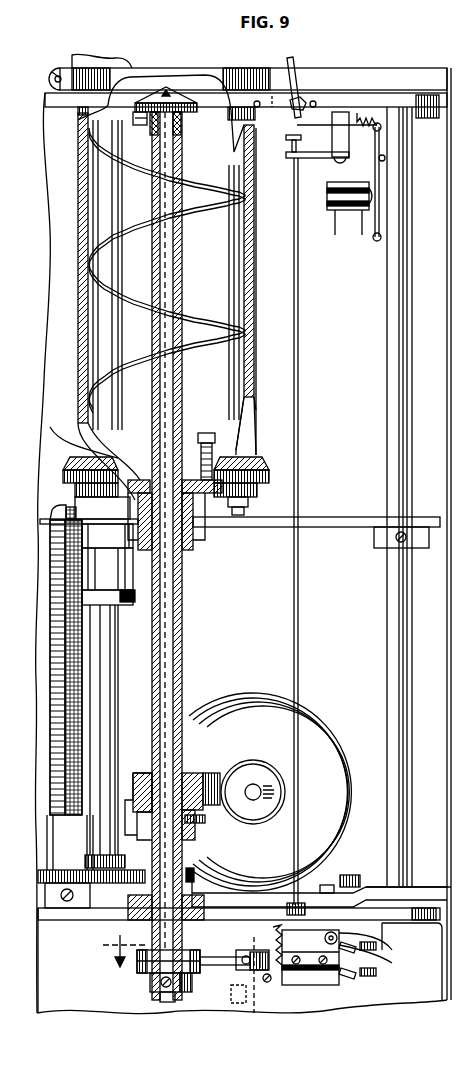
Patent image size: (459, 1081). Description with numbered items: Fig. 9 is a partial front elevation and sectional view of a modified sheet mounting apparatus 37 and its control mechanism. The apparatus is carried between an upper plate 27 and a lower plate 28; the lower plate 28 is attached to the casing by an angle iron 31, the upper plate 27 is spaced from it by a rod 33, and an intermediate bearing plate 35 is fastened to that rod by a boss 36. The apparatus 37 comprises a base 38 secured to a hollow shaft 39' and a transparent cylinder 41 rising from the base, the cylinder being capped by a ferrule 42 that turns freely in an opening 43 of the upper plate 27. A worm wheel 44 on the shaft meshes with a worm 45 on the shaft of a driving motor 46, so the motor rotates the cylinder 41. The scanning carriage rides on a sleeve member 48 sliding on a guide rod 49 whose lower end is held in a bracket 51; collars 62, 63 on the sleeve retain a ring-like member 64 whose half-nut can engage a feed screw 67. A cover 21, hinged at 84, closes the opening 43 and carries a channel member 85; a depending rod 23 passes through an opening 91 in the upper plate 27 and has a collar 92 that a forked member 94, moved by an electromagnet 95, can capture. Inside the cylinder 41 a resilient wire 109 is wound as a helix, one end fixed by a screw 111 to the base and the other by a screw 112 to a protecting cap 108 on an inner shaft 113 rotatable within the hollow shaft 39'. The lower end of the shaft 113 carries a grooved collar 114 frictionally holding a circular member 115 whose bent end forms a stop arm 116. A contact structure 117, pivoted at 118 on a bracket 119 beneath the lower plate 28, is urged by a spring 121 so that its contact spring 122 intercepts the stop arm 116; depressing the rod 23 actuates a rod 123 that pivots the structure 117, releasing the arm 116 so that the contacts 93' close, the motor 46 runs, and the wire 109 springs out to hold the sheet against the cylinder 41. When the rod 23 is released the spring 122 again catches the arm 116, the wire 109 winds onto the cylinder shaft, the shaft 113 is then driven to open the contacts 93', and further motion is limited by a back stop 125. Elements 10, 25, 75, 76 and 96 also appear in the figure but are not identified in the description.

The direction arrow 10 is at (124, 961).
The cover 21 is at (135, 68).
The switch operating rod 23 is at (295, 66).
The cylinder wall 25 is at (80, 178).
The upper plate 27 is at (432, 108).
The lower plate 28 is at (428, 908).
The angle iron 31 is at (445, 970).
The rod 33 is at (405, 378).
The intermediate bearing plate 35 is at (340, 520).
The boss 36 is at (375, 537).
The sheet mounting apparatus 37 is at (262, 436).
The base 38 is at (261, 466).
The hollow shaft 39' is at (185, 556).
The transparent cylinder 41 is at (252, 276).
The ferrule 42 is at (80, 115).
The opening 43 is at (261, 112).
The worm wheel 44 is at (209, 773).
The worm 45 is at (252, 768).
The driving motor 46 is at (330, 742).
The sleeve member 48 is at (92, 507).
The guide rod 49 is at (113, 712).
The bracket 51 is at (126, 861).
The collar 62 is at (130, 560).
The collar 63 is at (126, 605).
The ring-like member 64 is at (125, 576).
The feed screw 67 is at (53, 512).
The screw block 75 is at (63, 905).
The plate 76 is at (197, 870).
The hinge 84 is at (55, 79).
The channel member 85 is at (92, 62).
The opening 91 is at (316, 103).
The collar 92 is at (308, 100).
The contacts 93' is at (259, 988).
The forked member 94 is at (330, 132).
The electromagnet 95 is at (330, 194).
The pin 96 is at (52, 72).
The protecting cap 108 is at (176, 97).
The retaining wire 109 is at (213, 362).
The screw 111 is at (218, 440).
The screw 112 is at (141, 125).
The shaft 113 is at (181, 122).
The grooved collar 114 is at (196, 966).
The circular member 115 is at (147, 962).
The stop arm 116 is at (210, 957).
The contact structure 117 is at (309, 985).
The pivot 118 is at (385, 945).
The bracket 119 is at (383, 931).
The spring 121 is at (272, 940).
The contact spring 122 is at (240, 992).
The rod 123 is at (300, 656).
The back stop 125 is at (266, 982).